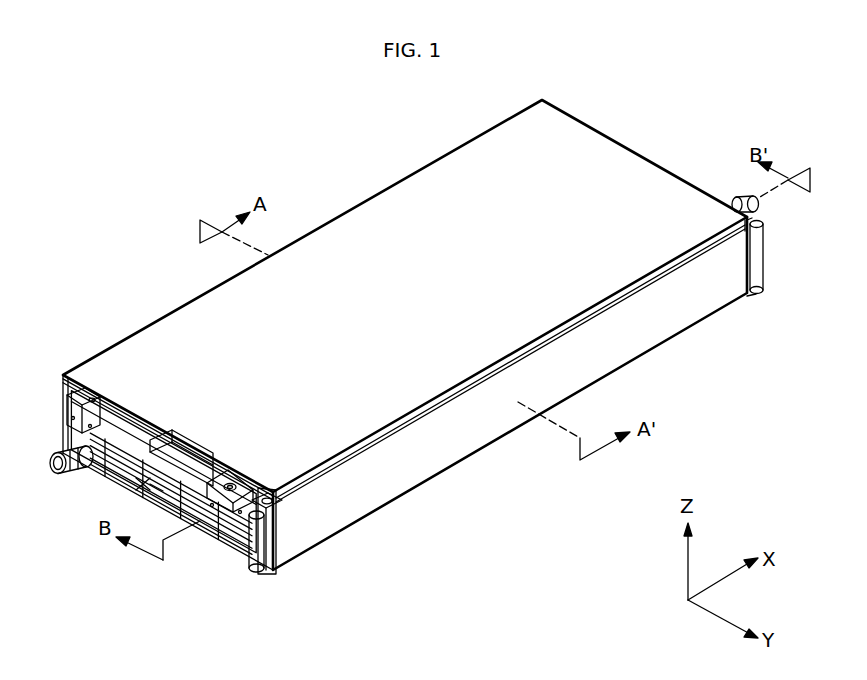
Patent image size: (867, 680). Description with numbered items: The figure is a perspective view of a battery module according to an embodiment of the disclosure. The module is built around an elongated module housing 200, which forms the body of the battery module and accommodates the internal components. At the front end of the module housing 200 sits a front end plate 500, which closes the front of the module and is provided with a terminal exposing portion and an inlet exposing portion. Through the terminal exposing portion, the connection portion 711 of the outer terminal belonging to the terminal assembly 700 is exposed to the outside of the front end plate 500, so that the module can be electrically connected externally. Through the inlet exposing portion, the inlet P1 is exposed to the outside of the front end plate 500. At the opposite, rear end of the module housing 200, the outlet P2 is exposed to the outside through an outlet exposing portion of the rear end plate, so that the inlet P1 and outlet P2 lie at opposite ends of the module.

The module housing 200 is at (433, 187).
The front end plate 500 is at (140, 493).
The terminal assembly 700 is at (263, 467).
The connection portion 711 is at (240, 480).
The inlet P1 is at (57, 453).
The outlet P2 is at (737, 198).